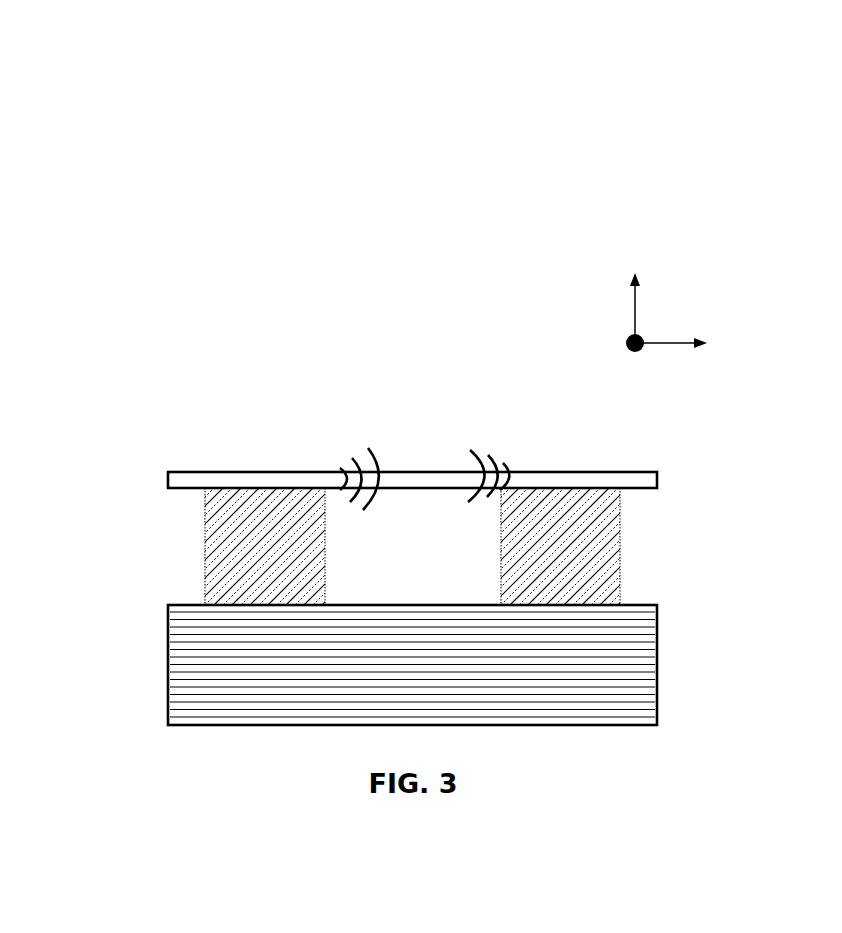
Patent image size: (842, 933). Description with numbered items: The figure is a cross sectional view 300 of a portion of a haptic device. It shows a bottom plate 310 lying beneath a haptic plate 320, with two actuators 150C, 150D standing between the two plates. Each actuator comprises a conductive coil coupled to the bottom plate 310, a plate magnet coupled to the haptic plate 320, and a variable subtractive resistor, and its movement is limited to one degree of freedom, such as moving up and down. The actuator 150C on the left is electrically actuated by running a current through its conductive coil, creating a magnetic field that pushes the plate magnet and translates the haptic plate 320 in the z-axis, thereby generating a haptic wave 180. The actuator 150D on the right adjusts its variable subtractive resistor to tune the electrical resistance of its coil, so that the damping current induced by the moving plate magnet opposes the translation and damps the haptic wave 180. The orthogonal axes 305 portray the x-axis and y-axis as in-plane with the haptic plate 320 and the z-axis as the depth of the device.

The cross sectional view 300 is at (397, 38).
The bottom plate 310 is at (168, 688).
The haptic plate 320 is at (168, 478).
The actuator 150C is at (205, 547).
The actuator 150D is at (620, 553).
The haptic wave 180 is at (470, 450).
The orthogonal axes 305 is at (641, 418).